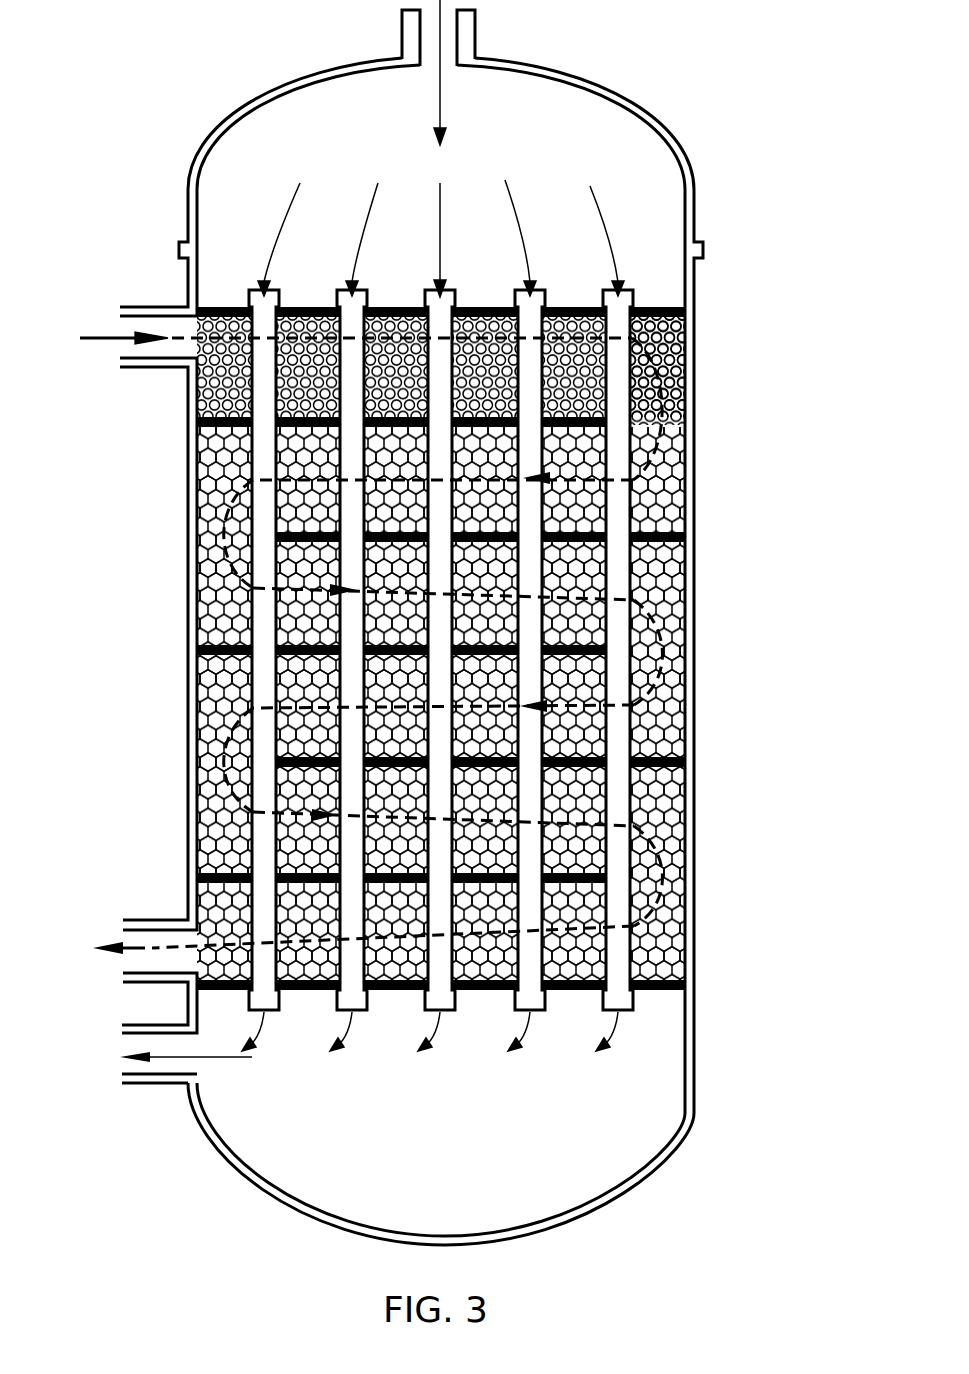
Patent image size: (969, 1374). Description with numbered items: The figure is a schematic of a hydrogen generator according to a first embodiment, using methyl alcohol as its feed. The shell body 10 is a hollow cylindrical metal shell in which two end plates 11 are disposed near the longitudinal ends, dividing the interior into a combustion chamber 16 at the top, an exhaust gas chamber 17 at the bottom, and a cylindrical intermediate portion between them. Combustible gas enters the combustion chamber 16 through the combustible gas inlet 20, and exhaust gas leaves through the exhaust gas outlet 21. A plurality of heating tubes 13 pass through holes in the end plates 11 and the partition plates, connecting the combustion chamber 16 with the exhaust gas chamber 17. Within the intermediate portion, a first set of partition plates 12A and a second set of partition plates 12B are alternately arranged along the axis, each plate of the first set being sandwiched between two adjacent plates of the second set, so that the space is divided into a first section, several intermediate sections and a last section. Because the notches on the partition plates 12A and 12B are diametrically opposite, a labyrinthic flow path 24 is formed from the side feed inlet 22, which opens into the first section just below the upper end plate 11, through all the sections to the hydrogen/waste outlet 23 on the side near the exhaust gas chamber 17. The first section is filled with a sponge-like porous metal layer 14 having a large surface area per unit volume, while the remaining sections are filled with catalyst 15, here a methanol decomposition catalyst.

The shell body 10 is at (684, 428).
The end plates 11 is at (655, 306).
The first set of partition plates 12A is at (208, 455).
The second set of partition plates 12B is at (678, 556).
The heating tubes 13 is at (676, 345).
The porous metal layer 14 is at (670, 358).
The catalyst 15 is at (680, 712).
The combustion chamber 16 is at (355, 112).
The exhaust gas chamber 17 is at (275, 1135).
The combustible gas inlet 20 is at (480, 34).
The exhaust gas outlet 21 is at (163, 1090).
The feed inlet 22 is at (160, 298).
The hydrogen/waste outlet 23 is at (142, 918).
The labyrinthic flow path 24 is at (106, 340).